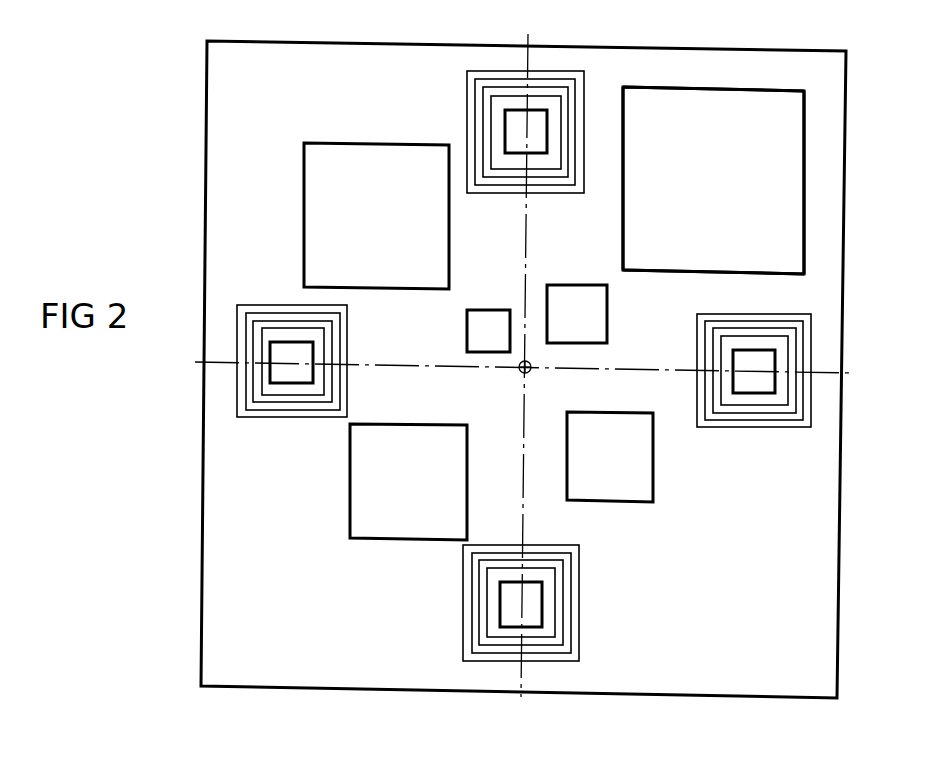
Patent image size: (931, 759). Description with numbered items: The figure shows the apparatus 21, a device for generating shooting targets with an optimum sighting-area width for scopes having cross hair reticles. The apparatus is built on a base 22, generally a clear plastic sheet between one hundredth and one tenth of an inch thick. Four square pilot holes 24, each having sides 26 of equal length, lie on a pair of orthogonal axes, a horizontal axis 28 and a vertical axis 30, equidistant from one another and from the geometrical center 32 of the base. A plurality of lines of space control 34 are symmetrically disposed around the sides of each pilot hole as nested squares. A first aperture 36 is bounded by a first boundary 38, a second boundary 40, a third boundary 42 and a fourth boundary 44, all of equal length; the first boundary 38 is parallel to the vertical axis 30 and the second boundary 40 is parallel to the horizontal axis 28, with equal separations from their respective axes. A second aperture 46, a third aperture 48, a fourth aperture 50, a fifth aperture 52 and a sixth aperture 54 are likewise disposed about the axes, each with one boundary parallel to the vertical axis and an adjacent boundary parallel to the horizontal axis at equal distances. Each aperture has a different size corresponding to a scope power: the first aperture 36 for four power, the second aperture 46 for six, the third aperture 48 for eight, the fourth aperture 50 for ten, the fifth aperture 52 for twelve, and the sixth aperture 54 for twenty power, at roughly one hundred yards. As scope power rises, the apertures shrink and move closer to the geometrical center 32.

The apparatus 21 is at (196, 453).
The base 22 is at (262, 94).
The pilot holes 24 is at (514, 146).
The sides 26 is at (505, 127).
The horizontal axis 28 is at (504, 362).
The vertical axis 30 is at (527, 353).
The geometrical center 32 is at (522, 377).
The lines of space control 34 is at (467, 97).
The first aperture 36 is at (676, 181).
The first boundary 38 is at (622, 232).
The second boundary 40 is at (677, 273).
The third boundary 42 is at (806, 170).
The fourth boundary 44 is at (735, 87).
The second aperture 46 is at (359, 229).
The third aperture 48 is at (398, 500).
The fourth aperture 50 is at (593, 465).
The fifth aperture 52 is at (563, 328).
The sixth aperture 54 is at (478, 348).